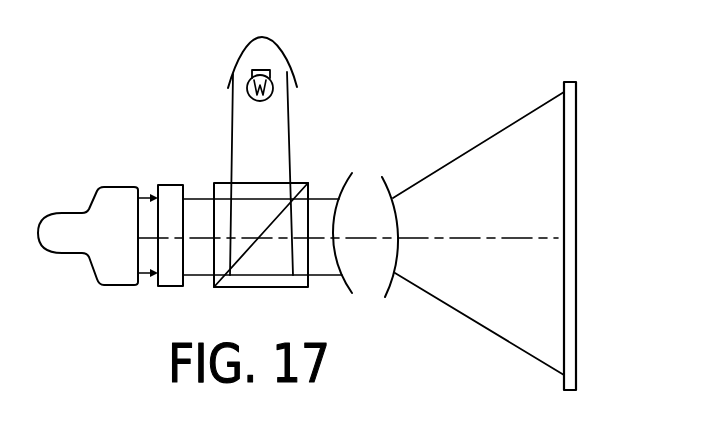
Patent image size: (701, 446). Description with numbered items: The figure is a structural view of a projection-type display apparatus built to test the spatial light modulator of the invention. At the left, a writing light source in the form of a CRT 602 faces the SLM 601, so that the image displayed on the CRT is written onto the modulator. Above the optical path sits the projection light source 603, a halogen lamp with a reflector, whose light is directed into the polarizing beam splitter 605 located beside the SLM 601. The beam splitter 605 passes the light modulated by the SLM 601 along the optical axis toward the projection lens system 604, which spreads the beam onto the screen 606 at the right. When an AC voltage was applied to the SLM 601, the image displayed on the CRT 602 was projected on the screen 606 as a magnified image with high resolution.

The SLM 601 is at (160, 184).
The writing light source (CRT) 602 is at (112, 187).
The projection light source 603 is at (282, 47).
The projection lens system 604 is at (375, 178).
The polarizing beam splitter 605 is at (285, 288).
The screen 606 is at (568, 82).